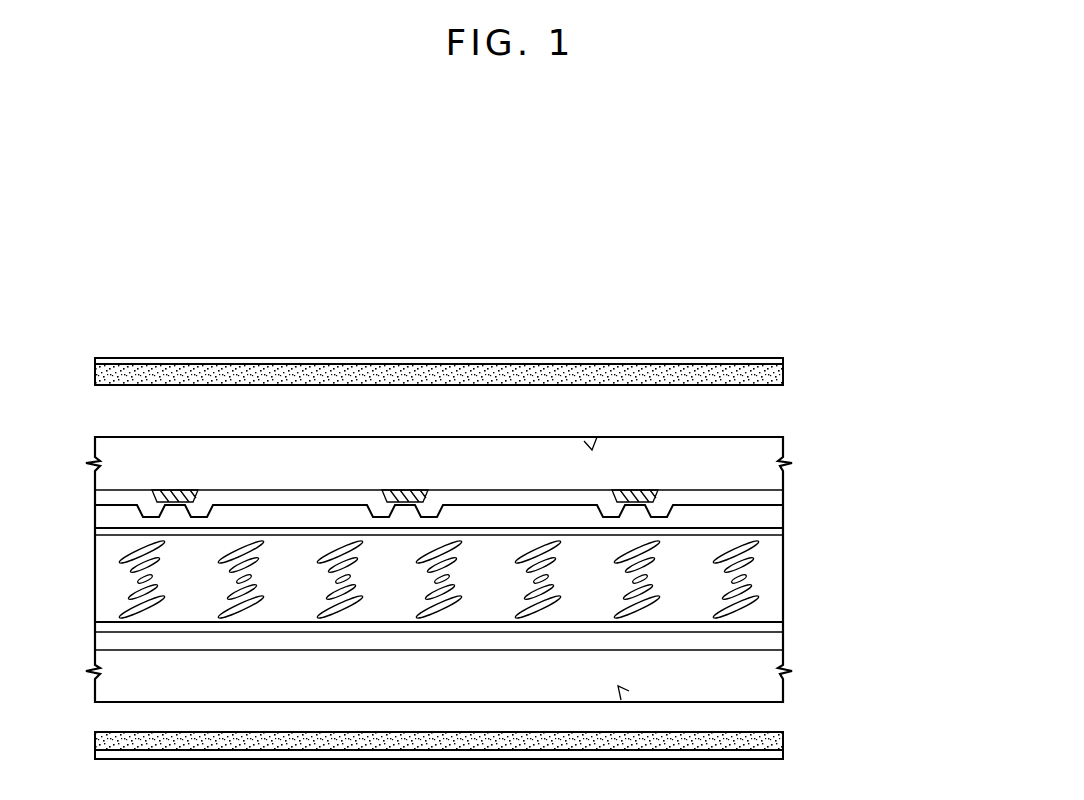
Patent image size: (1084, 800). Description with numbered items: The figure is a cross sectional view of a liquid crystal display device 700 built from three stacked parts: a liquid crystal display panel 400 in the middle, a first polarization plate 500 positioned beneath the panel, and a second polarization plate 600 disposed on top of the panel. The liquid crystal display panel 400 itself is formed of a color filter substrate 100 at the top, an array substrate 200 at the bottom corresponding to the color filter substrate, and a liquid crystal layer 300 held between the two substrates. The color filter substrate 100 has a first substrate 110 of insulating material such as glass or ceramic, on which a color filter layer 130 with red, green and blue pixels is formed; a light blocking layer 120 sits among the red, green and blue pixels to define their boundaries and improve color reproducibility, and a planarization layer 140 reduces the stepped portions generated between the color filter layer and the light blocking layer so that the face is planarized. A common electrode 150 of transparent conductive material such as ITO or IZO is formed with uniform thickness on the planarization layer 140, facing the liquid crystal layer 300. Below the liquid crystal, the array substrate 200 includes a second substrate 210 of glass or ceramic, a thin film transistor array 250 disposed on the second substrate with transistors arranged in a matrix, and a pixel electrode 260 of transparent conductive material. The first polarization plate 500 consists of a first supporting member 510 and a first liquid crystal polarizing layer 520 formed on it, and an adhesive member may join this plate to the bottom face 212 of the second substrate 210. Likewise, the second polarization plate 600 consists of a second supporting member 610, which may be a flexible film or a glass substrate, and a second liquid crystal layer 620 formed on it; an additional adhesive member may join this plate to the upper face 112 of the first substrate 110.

The liquid crystal display device 700 is at (480, 317).
The second polarization plate 600 is at (496, 361).
The second supporting member 610 is at (694, 374).
The second liquid crystal layer 620 is at (848, 353).
The color filter substrate 100 is at (496, 422).
The first substrate 110 is at (783, 447).
The upper face of the first substrate 112 is at (597, 437).
The light blocking layer 120 is at (642, 491).
The color filter layer 130 is at (783, 494).
The planarization layer 140 is at (472, 518).
The common electrode 150 is at (783, 536).
The liquid crystal layer 300 is at (745, 585).
The liquid crystal display panel 400 is at (898, 483).
The array substrate 200 is at (496, 710).
The pixel electrode 260 is at (783, 626).
The thin film transistor array 250 is at (783, 648).
The second substrate 210 is at (783, 684).
The bottom face of the second substrate 212 is at (621, 700).
The first polarization plate 500 is at (496, 739).
The first liquid crystal polarizing layer 520 is at (783, 735).
The first supporting member 510 is at (472, 757).